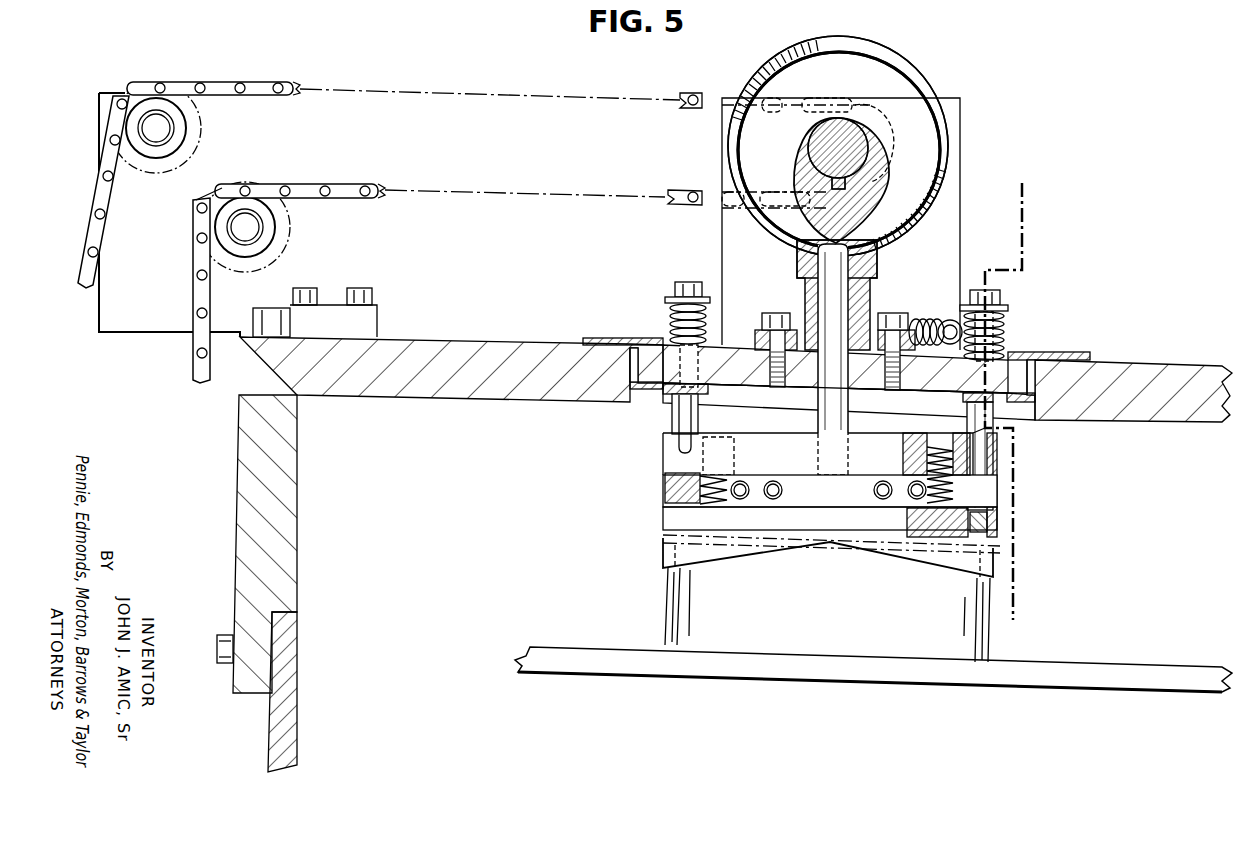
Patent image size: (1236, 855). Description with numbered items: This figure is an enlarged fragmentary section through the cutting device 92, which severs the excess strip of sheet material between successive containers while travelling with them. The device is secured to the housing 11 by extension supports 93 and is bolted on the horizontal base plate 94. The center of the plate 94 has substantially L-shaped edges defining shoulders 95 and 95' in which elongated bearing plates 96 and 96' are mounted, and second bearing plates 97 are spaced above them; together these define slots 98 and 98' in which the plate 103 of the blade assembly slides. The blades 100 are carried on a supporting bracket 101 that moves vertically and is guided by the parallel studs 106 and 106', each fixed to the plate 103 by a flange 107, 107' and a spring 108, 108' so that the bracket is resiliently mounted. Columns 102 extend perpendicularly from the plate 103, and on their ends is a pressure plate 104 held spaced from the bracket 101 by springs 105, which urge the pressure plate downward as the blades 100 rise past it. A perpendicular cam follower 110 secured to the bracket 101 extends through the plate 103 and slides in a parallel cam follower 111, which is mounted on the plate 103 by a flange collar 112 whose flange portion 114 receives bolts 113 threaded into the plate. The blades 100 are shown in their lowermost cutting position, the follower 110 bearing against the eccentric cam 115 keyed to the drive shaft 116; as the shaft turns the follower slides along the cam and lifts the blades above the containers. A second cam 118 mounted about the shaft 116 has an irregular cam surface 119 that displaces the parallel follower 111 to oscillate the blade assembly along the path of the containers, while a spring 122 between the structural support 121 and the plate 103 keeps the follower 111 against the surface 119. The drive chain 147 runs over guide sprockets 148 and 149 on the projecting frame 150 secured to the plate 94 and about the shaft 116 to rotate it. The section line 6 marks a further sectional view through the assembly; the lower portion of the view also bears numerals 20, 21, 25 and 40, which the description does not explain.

The section line 6 is at (1026, 197).
The housing 11 is at (283, 642).
The base 20 is at (542, 658).
The leg 21 is at (668, 628).
The die plate 25 is at (660, 546).
The backing plate 40 is at (660, 537).
The cutting device 92 is at (839, 25).
The extension support 93 is at (292, 456).
The base plate 94 is at (440, 388).
The shoulder 95 is at (666, 406).
The shoulder 95' is at (1008, 416).
The elongated bearing plate 96 is at (608, 388).
The elongated bearing plate 96' is at (1061, 400).
The second bearing plate 97 is at (600, 338).
The slot 98 is at (639, 353).
The slot 98' is at (1029, 365).
The blade 100 is at (768, 550).
The supporting bracket 101 is at (785, 440).
The column 102 is at (700, 400).
The plate 103 is at (932, 385).
The pressure plate 104 is at (670, 515).
The spring 105 is at (690, 485).
The parallel stud 106 is at (658, 324).
The parallel stud 106' is at (1013, 318).
The flange 107 is at (662, 291).
The flange 107' is at (1008, 305).
The spring 108 is at (660, 320).
The spring 108' is at (1010, 335).
The cam follower 110 is at (832, 250).
The parallel cam follower 111 is at (800, 265).
The flange collar 112 is at (803, 296).
The bolt 113 is at (768, 318).
The flange portion 114 is at (757, 340).
The eccentric cam 115 is at (802, 174).
The drive shaft 116 is at (822, 145).
The second cam 118 is at (936, 74).
The irregular cam surface 119 is at (938, 100).
The structural support 121 is at (950, 258).
The spring 122 is at (945, 322).
The drive chain 147 is at (80, 284).
The guide sprocket 148 is at (205, 130).
The guide sprocket 149 is at (227, 180).
The projecting frame 150 is at (122, 330).